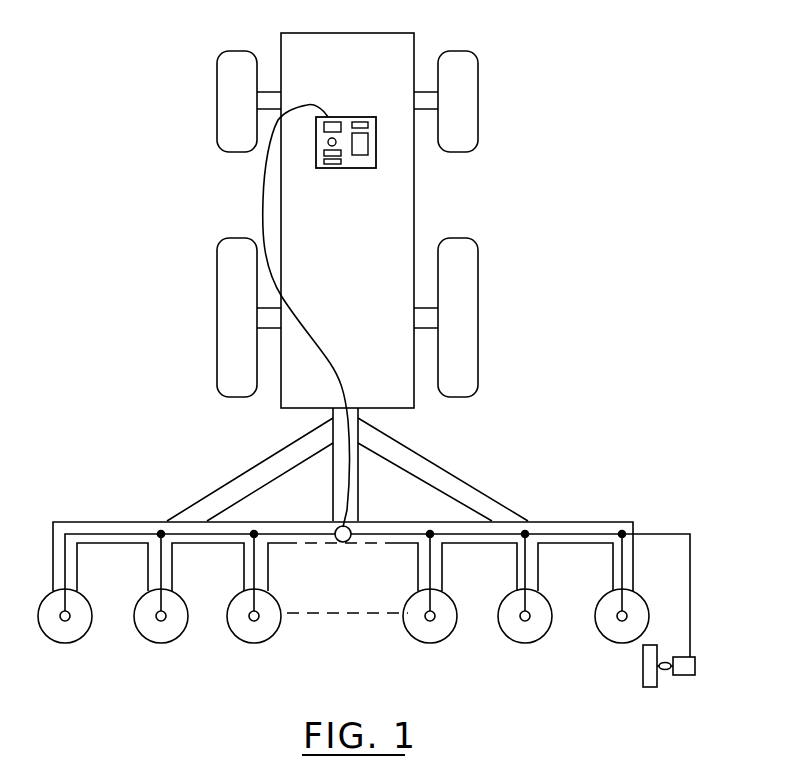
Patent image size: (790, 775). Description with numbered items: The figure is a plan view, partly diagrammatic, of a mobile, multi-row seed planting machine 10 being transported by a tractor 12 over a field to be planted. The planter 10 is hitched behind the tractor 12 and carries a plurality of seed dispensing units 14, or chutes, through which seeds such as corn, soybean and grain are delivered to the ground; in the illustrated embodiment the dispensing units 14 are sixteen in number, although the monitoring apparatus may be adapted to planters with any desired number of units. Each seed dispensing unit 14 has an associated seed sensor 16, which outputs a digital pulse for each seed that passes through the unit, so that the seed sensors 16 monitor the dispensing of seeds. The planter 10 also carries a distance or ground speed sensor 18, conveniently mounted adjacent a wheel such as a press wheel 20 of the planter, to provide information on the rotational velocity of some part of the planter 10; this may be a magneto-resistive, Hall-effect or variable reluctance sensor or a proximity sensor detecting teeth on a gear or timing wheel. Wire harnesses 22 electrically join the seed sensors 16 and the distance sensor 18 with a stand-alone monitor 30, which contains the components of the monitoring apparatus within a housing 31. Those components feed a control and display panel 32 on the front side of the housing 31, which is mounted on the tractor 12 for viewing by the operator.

The seed planting machine 10 is at (148, 485).
The tractor 12 is at (207, 215).
The seed dispensing units 14 is at (80, 633).
The seed sensor 16 is at (658, 588).
The distance sensor 18 is at (683, 675).
The press wheel 20 is at (648, 687).
The wire harnesses 22 is at (498, 533).
The monitor 30 is at (343, 117).
The housing 31 is at (373, 133).
The control and display panel 32 is at (340, 132).